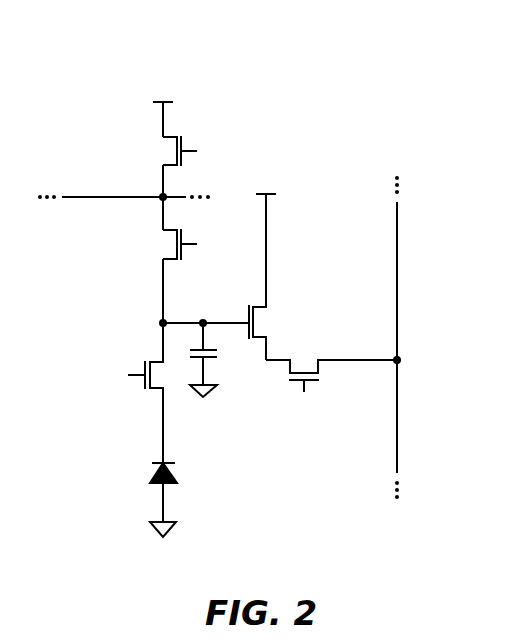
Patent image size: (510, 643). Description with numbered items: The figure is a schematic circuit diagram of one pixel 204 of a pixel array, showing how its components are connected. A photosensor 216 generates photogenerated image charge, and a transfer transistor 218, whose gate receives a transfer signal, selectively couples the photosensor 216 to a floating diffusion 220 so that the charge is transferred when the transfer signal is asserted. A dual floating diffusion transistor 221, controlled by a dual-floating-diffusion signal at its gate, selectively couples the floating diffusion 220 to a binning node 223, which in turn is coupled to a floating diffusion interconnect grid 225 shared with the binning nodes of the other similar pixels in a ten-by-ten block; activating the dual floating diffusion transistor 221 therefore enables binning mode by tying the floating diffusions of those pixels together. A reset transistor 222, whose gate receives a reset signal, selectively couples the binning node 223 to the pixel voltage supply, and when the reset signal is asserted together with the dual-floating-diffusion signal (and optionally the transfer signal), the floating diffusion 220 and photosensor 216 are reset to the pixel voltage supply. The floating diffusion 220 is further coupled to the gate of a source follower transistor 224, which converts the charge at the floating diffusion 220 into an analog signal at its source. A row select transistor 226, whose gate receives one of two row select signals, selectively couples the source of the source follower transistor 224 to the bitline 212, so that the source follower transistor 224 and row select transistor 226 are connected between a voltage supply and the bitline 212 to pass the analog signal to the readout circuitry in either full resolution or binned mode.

The pixel 204 is at (464, 51).
The bitline 212 is at (404, 228).
The photosensor 216 is at (155, 492).
The transfer transistor 218 is at (158, 392).
The floating diffusion 220 is at (197, 297).
The dual floating diffusion (DFD) transistor 221 is at (185, 236).
The reset transistor 222 is at (184, 137).
The binning node 223 is at (158, 193).
The source follower transistor 224 is at (254, 305).
The floating diffusion interconnect grid 225 is at (80, 205).
The row select transistor 226 is at (311, 356).